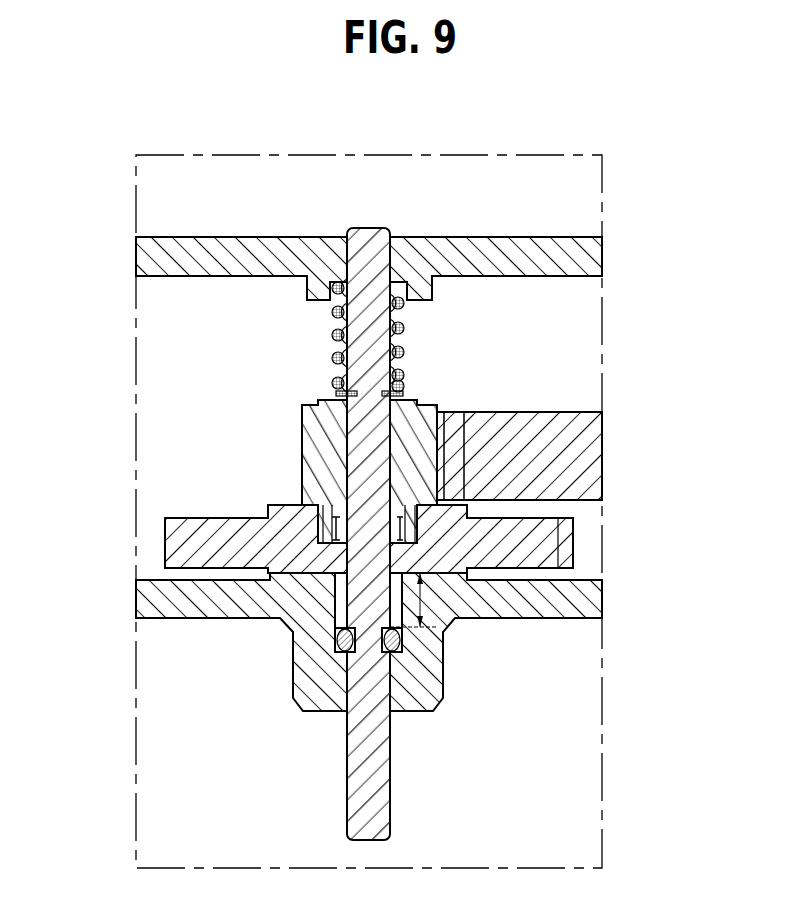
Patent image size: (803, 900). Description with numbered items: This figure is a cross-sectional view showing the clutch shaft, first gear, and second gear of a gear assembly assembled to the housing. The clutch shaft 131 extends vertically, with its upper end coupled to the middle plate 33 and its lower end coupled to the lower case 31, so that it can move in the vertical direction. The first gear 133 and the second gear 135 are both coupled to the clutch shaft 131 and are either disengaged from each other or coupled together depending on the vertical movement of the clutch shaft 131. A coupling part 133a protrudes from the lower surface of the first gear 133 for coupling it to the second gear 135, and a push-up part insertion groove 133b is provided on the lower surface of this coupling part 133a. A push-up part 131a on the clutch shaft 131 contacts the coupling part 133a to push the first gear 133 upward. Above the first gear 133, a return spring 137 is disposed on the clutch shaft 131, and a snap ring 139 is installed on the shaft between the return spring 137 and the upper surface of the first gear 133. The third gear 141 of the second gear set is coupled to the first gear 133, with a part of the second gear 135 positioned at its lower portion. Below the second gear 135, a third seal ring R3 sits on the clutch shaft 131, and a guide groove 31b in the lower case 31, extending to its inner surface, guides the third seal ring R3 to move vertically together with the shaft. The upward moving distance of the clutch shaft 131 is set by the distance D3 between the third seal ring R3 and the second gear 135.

The middle plate 33 is at (143, 262).
The return spring 137 is at (402, 328).
The snap ring 139 is at (400, 395).
The third gear 141 is at (587, 459).
The first gear 133 is at (315, 445).
The coupling part 133a is at (315, 520).
The push-up part insertion groove 133b is at (335, 541).
The second gear 135 is at (177, 543).
The push-up part 131a is at (403, 520).
The lower case 31 is at (147, 597).
The guide groove 31b is at (342, 603).
The third seal ring R3 is at (403, 637).
The clutch shaft 131 is at (360, 782).
The distance D3 is at (421, 600).